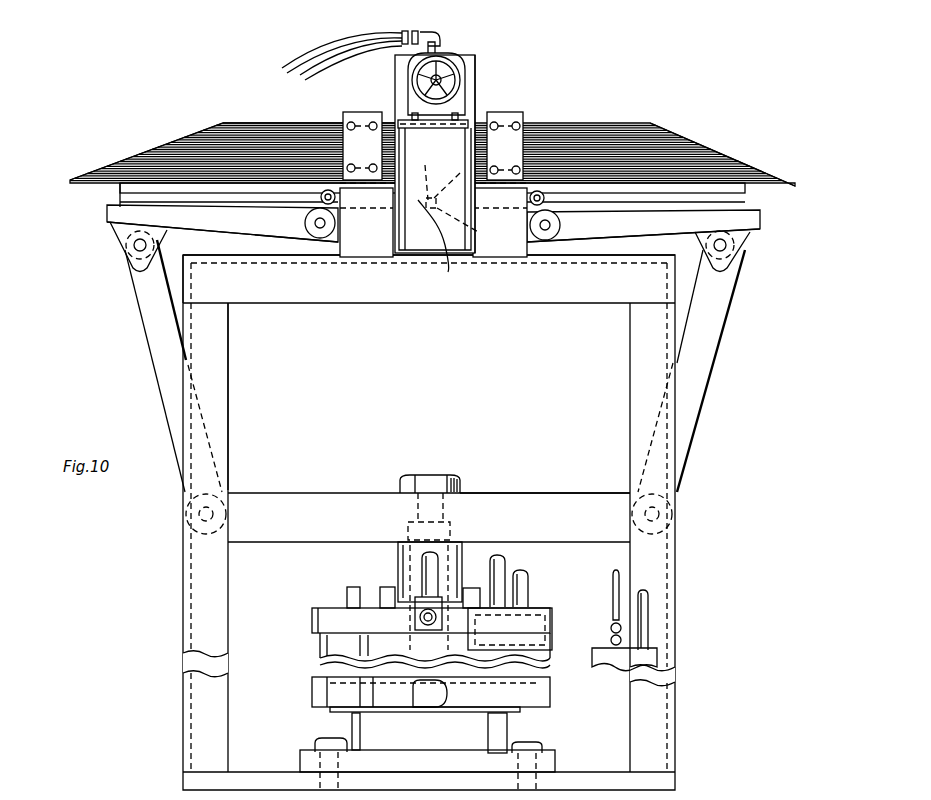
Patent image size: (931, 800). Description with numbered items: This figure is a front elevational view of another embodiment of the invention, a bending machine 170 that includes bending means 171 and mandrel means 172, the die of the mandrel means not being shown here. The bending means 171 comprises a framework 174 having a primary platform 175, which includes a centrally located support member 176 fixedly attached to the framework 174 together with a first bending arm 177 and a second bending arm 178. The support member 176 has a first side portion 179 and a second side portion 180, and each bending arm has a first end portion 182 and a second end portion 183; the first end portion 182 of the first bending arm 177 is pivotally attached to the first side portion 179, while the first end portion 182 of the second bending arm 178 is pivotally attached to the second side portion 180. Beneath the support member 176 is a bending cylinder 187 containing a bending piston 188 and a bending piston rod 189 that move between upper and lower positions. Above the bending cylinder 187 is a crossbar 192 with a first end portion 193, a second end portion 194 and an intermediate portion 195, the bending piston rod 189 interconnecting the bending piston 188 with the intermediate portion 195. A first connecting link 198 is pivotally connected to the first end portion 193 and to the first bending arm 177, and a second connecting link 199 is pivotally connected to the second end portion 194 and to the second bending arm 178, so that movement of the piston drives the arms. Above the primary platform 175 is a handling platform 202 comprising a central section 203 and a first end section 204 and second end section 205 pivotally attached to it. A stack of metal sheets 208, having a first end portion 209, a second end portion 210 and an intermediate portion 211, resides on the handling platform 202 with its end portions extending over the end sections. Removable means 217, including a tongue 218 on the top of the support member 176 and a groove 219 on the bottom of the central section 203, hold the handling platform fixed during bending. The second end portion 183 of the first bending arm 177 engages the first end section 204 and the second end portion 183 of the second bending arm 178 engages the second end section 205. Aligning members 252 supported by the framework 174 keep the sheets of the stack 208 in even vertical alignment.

The bending machine 170 is at (103, 138).
The bending means 171 is at (476, 376).
The mandrel means 172 is at (493, 43).
The framework 174 is at (218, 330).
The primary platform 175 is at (377, 230).
The centrally located support member 176 is at (450, 257).
The first bending arm 177 is at (623, 232).
The second bending arm 178 is at (211, 226).
The first side portion 179 is at (540, 250).
The second side portion 180 is at (322, 243).
The first end portion 182 is at (290, 228).
The second end portion 183 is at (118, 232).
The bending cylinder 187 is at (340, 648).
The bending piston 188 is at (315, 683).
The bending piston rod 189 is at (382, 562).
The crossbar 192 is at (357, 500).
The first end portion 193 is at (607, 505).
The second end portion 194 is at (240, 502).
The intermediate portion 195 is at (470, 507).
The first connecting link 198 is at (705, 358).
The second connecting link 199 is at (165, 363).
The handling platform 202 is at (108, 206).
The central section 203 is at (424, 236).
The first end section 204 is at (745, 198).
The second end section 205 is at (118, 190).
The stack of metal sheets 208 is at (241, 124).
The first end portion 209 is at (680, 146).
The second end portion 210 is at (157, 143).
The intermediate portion 211 is at (478, 125).
The removable means 217 is at (508, 243).
The tongue 218 is at (421, 179).
The groove 219 is at (448, 179).
The aligning members 252 is at (365, 110).